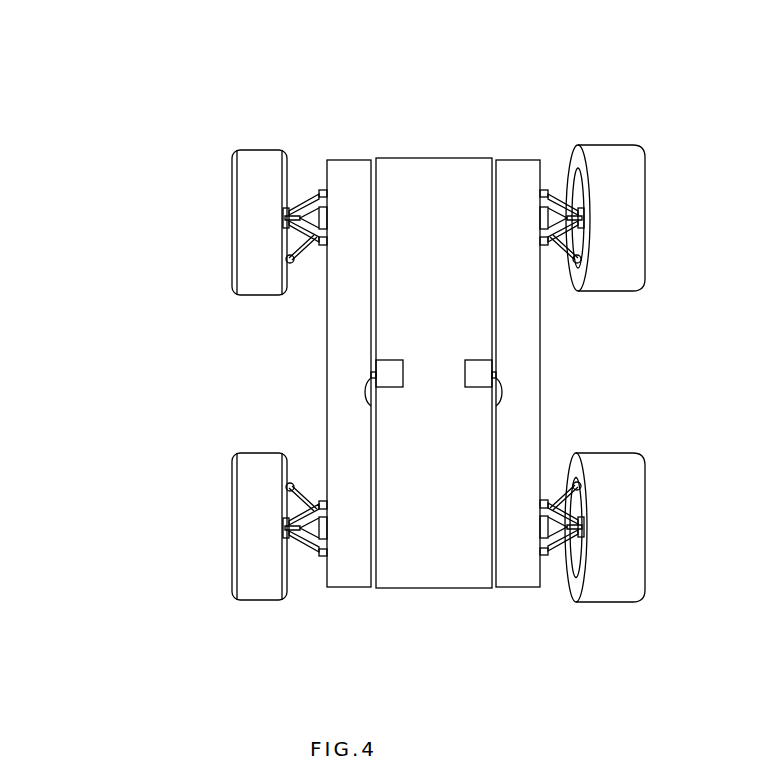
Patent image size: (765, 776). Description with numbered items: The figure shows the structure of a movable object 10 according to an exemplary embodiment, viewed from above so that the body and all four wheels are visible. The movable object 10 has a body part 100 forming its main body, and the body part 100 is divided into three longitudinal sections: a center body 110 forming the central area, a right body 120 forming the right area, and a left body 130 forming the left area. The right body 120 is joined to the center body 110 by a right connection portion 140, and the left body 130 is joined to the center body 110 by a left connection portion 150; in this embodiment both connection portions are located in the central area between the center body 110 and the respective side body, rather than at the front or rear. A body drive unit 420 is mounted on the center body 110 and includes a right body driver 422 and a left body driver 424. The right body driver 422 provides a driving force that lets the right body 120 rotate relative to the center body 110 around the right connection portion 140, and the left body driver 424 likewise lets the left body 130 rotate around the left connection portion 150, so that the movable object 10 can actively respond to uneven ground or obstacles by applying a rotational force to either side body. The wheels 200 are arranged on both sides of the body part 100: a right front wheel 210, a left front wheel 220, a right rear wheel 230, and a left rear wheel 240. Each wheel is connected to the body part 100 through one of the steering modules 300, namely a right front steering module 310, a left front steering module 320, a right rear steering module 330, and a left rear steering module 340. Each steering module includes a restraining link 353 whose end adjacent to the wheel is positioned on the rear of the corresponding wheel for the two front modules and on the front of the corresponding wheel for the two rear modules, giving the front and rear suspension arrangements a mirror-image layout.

The movable object 10 is at (214, 42).
The body part 100 is at (363, 73).
The center body 110 is at (445, 170).
The right body 120 is at (508, 170).
The left body 130 is at (357, 172).
The right connection portion 140 is at (498, 405).
The left connection portion 150 is at (370, 400).
The wheel 200 is at (107, 248).
The right front wheel 210 is at (610, 155).
The left front wheel 220 is at (263, 155).
The right rear wheel 230 is at (608, 458).
The left rear wheel 240 is at (263, 460).
The steering module 300 is at (107, 382).
The right front steering module 310 is at (555, 182).
The left front steering module 320 is at (311, 185).
The right rear steering module 330 is at (562, 485).
The left rear steering module 340 is at (310, 483).
The restraining link 353 is at (307, 250).
The body drive unit 420 is at (395, 285).
The right body driver 422 is at (478, 365).
The left body driver 424 is at (392, 363).